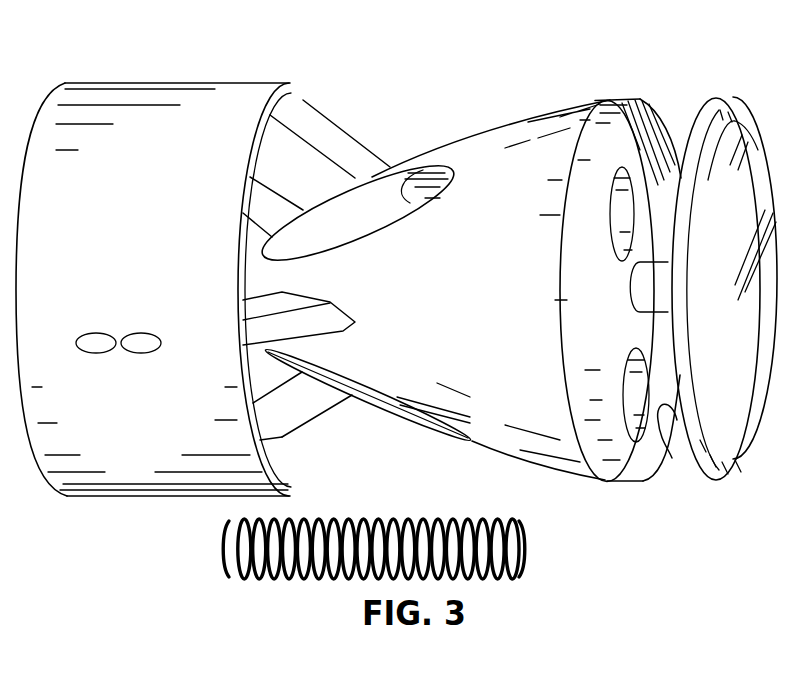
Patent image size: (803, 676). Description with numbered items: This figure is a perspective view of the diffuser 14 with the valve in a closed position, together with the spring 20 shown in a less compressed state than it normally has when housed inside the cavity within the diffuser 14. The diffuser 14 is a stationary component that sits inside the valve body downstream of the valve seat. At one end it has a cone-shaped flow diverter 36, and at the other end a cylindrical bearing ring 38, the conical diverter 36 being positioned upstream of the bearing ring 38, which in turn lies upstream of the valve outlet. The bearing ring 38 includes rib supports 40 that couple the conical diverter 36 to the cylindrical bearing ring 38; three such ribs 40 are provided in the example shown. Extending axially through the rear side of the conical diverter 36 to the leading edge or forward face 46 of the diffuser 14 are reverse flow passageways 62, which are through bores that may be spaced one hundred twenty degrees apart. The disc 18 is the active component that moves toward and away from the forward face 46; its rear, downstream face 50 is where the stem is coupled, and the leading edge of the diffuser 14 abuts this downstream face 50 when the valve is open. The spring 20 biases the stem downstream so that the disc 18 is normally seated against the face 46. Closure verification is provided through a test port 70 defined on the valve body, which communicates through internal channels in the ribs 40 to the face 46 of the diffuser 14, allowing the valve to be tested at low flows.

The diffuser 14 is at (523, 430).
The disc 18 is at (690, 175).
The spring 20 is at (528, 550).
The cone-shaped flow diverter 36 is at (530, 145).
The cylindrical bearing ring 38 is at (180, 128).
The rib supports 40 is at (323, 145).
The forward face 46 is at (620, 132).
The downstream face 50 is at (672, 458).
The reverse flow passageways 62 is at (393, 207).
The test port 70 is at (138, 348).